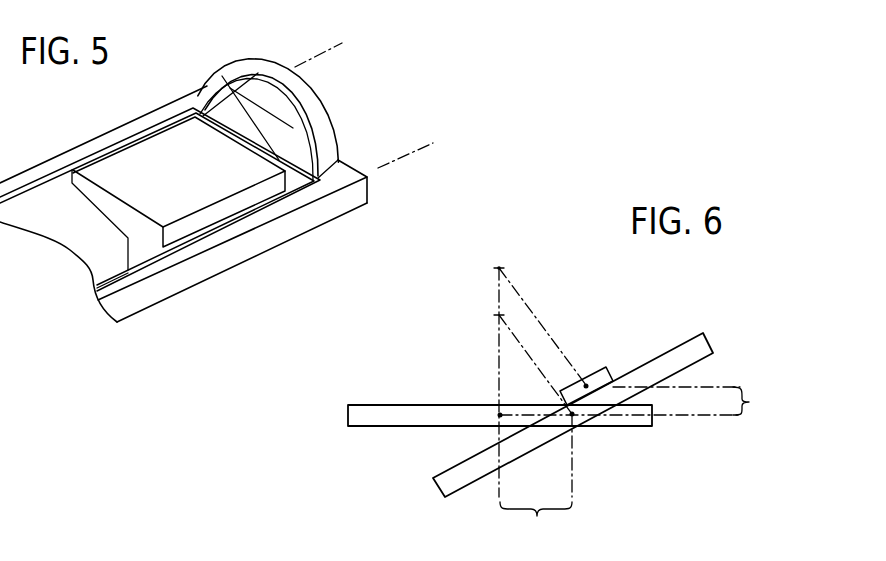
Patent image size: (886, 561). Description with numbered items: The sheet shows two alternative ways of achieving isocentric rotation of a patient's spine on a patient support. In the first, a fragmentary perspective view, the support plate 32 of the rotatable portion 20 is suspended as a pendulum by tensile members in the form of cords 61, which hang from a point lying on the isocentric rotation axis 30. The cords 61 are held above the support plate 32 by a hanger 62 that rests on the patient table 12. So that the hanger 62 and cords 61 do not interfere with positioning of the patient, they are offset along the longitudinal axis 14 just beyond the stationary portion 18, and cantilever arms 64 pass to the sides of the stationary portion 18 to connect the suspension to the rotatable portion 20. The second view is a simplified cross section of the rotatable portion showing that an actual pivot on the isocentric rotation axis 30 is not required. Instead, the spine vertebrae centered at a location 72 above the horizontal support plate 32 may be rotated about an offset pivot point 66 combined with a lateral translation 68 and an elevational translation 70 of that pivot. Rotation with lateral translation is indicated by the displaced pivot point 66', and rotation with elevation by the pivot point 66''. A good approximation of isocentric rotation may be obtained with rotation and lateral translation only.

In FIG. 5, the patient table 12 is at (331, 219).
In FIG. 5, the longitudinal axis 14 is at (405, 156).
In FIG. 5, the stationary portion 18 is at (188, 176).
In FIG. 5, the rotatable portion 20 is at (55, 226).
In FIG. 6, the rotatable portion 20 is at (304, 413).
In FIG. 5, the isocentric rotation axis 30 is at (323, 56).
In FIG. 6, the isocentric rotation axis 30 is at (501, 268).
In FIG. 5, the support plate 32 is at (133, 268).
In FIG. 6, the support plate 32 is at (411, 413).
In FIG. 5, the cords 61 is at (281, 49).
In FIG. 5, the hanger 62 is at (324, 142).
In FIG. 5, the cantilever arms 64 is at (50, 178).
In FIG. 6, the offset pivot point 66 is at (584, 437).
In FIG. 6, the pivot point 66' is at (613, 455).
In FIG. 6, the pivot point 66'' is at (650, 359).
In FIG. 6, the lateral translation 68 is at (538, 517).
In FIG. 6, the elevational translation 70 is at (750, 402).
In FIG. 6, the location 72 is at (497, 268).